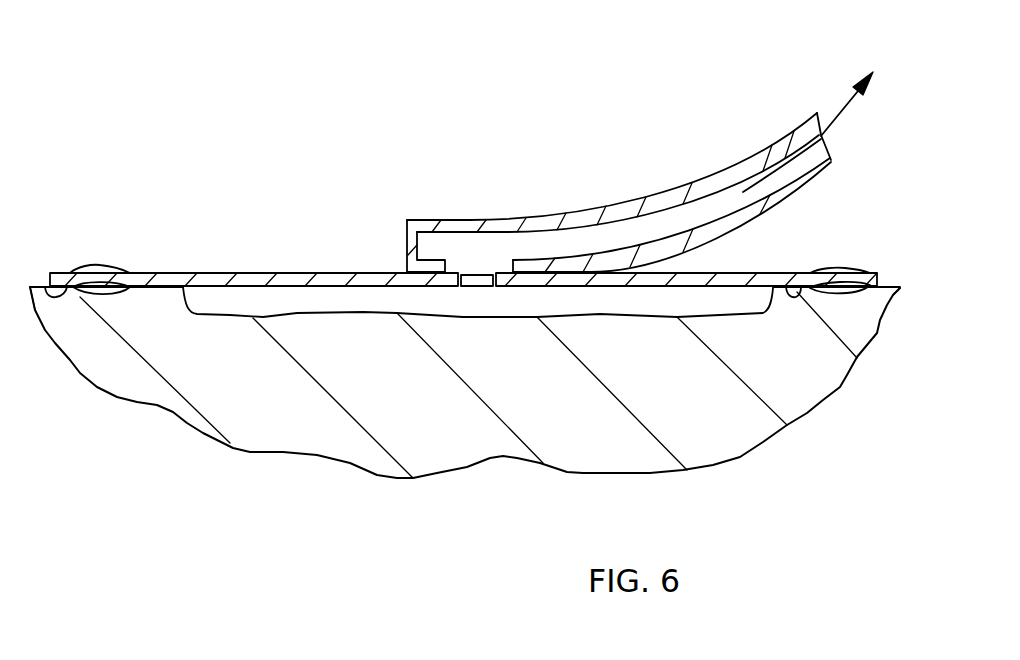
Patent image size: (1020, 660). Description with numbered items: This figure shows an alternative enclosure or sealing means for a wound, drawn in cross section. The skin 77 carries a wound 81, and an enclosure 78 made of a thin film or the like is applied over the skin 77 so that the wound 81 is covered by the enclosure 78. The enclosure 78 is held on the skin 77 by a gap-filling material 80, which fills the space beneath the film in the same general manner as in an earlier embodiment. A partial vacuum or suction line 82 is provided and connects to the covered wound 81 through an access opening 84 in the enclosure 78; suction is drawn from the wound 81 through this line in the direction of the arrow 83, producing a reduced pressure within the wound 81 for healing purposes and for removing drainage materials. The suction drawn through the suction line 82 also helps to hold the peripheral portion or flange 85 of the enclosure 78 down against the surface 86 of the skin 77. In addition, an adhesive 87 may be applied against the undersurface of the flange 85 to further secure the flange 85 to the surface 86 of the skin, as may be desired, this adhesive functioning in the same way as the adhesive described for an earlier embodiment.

The skin 77 is at (312, 430).
The enclosure 78 is at (302, 278).
The gap-filling material 80 is at (117, 279).
The wound 81 is at (706, 302).
The suction line 82 is at (586, 211).
The arrow 83 is at (840, 114).
The access opening 84 is at (478, 282).
The flange 85 is at (167, 271).
The surface of the skin 86 is at (31, 286).
The adhesive 87 is at (44, 284).